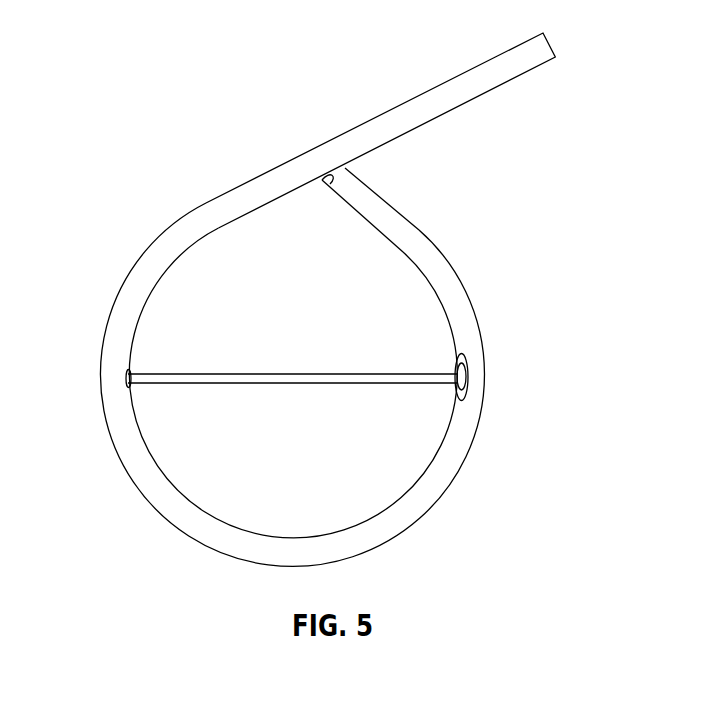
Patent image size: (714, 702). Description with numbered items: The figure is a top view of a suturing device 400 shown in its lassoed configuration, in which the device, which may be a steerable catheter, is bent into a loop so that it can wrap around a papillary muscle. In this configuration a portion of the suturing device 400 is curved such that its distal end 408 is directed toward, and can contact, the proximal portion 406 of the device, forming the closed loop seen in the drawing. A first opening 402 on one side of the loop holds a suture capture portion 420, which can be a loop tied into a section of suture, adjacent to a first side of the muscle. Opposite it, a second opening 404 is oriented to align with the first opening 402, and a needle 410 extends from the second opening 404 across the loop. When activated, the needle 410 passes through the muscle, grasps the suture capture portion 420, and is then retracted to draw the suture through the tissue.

The suturing device 400 is at (178, 222).
The first opening 402 is at (467, 390).
The second opening 404 is at (127, 390).
The proximal portion 406 is at (273, 183).
The distal end 408 is at (324, 182).
The needle 410 is at (243, 372).
The suture capture portion 420 is at (462, 363).